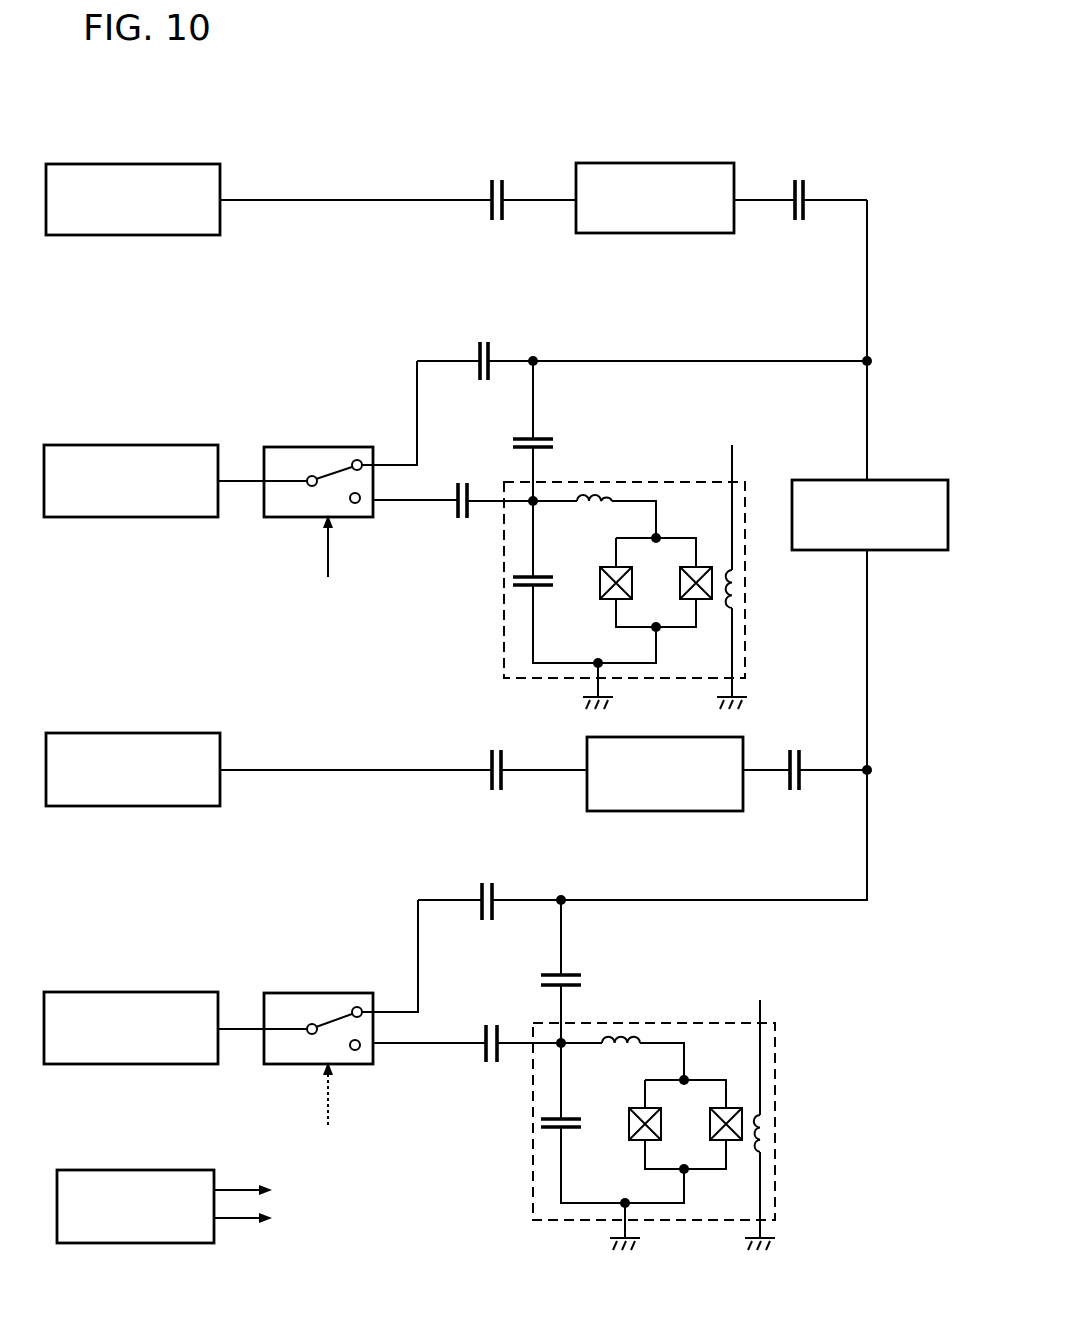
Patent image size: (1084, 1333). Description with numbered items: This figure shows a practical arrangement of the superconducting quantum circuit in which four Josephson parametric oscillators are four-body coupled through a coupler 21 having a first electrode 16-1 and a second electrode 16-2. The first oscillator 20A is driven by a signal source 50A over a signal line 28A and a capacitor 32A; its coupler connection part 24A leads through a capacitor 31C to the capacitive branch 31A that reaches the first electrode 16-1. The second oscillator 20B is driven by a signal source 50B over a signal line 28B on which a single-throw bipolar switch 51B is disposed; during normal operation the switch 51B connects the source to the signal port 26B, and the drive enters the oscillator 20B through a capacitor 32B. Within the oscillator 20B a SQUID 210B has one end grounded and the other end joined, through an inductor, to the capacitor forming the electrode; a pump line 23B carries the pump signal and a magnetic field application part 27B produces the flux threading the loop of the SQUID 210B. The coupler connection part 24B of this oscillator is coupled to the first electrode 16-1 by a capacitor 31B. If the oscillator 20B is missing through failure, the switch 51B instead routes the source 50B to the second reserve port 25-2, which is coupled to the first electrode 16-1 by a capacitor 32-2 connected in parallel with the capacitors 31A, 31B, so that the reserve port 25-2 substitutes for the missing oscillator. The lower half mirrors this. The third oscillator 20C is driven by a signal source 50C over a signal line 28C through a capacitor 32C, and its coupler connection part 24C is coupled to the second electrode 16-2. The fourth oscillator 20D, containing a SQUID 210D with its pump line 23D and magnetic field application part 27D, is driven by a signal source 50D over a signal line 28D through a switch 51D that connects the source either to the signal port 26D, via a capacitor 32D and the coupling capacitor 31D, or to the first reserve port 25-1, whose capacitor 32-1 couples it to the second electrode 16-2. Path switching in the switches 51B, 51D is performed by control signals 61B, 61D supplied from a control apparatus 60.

The signal source 50A is at (148, 160).
The signal line 28A is at (250, 198).
The capacitor 32A is at (505, 188).
The JPO1 20A is at (655, 198).
The capacitor 24A is at (748, 200).
The transmission line 31C is at (806, 192).
The capacitor 31A is at (868, 282).
The coupler 21 is at (910, 478).
The first electrode 16-1 is at (868, 470).
The second electrode 16-2 is at (868, 650).
The reserve port 25-2 is at (455, 360).
The capacitor 32-2 is at (492, 348).
The capacitor 31B is at (540, 436).
The line 24B is at (534, 478).
The signal source 50B is at (147, 440).
The signal line 28B is at (226, 478).
The switch 51B is at (345, 440).
The signal port 26B is at (440, 500).
The capacitor 32B is at (465, 482).
The control signal 61B is at (325, 570).
The JPO2 20B is at (596, 481).
The SQUID 210B is at (664, 532).
The readout line 23B is at (735, 472).
The inductor 27B is at (738, 600).
The signal source 50C is at (148, 728).
The signal line 28C is at (248, 768).
The capacitor 32C is at (503, 754).
The JPO3 20C is at (665, 774).
The coupler connection part 24C is at (750, 768).
The reserve port 25-1 is at (458, 900).
The capacitor 32-1 is at (495, 888).
The capacitor 31D is at (568, 975).
The signal source 50D is at (147, 988).
The signal line 28D is at (226, 1027).
The switch 51D is at (345, 988).
The signal port 26D is at (470, 1043).
The capacitor 32D is at (500, 1024).
The control signal 61D is at (330, 1122).
The control apparatus 60 is at (168, 1168).
The JPO4 20D is at (630, 1022).
The SQUID 210D is at (692, 1074).
The pump line 23D is at (763, 1017).
The magnetic field application part 27D is at (765, 1142).